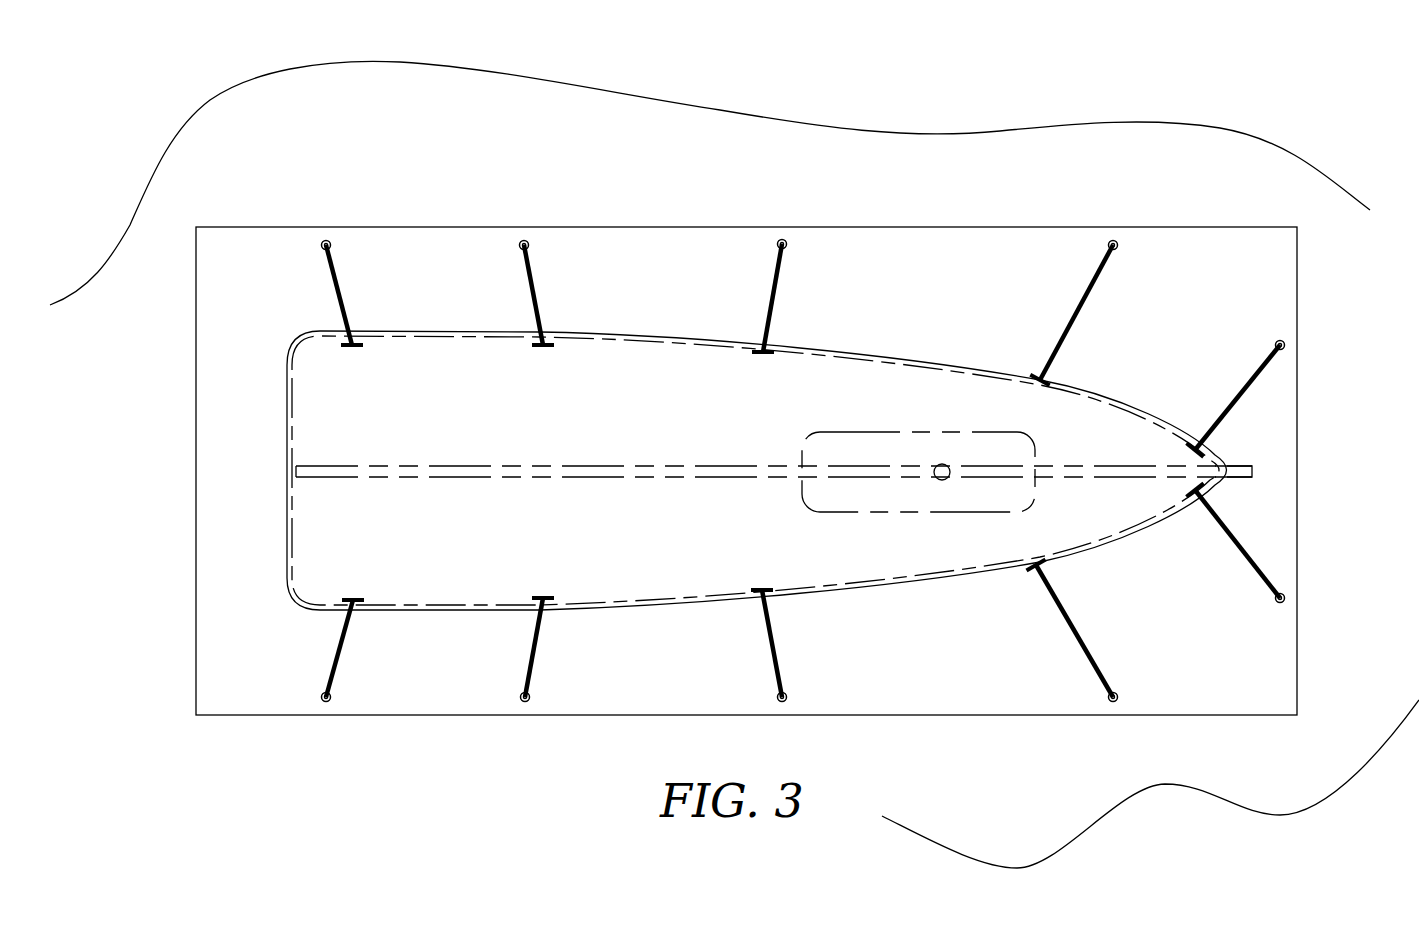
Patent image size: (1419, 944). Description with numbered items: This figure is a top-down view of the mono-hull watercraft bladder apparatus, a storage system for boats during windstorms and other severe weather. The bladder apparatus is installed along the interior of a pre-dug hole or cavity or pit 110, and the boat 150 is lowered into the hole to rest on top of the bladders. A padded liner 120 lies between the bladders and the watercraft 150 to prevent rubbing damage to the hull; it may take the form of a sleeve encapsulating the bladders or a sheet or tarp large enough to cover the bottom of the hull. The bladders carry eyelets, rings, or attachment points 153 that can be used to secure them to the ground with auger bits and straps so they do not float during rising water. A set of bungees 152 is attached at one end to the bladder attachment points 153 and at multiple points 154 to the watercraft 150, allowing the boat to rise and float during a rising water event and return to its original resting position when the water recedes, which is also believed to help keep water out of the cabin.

The pre-dug hole, cavity or pit 110 is at (963, 147).
The padded liner 120 is at (1287, 257).
The boat 150 is at (827, 365).
The bungees 152 is at (1248, 388).
The attachment points 153 is at (1283, 350).
The attachment points on the watercraft 154 is at (1213, 445).